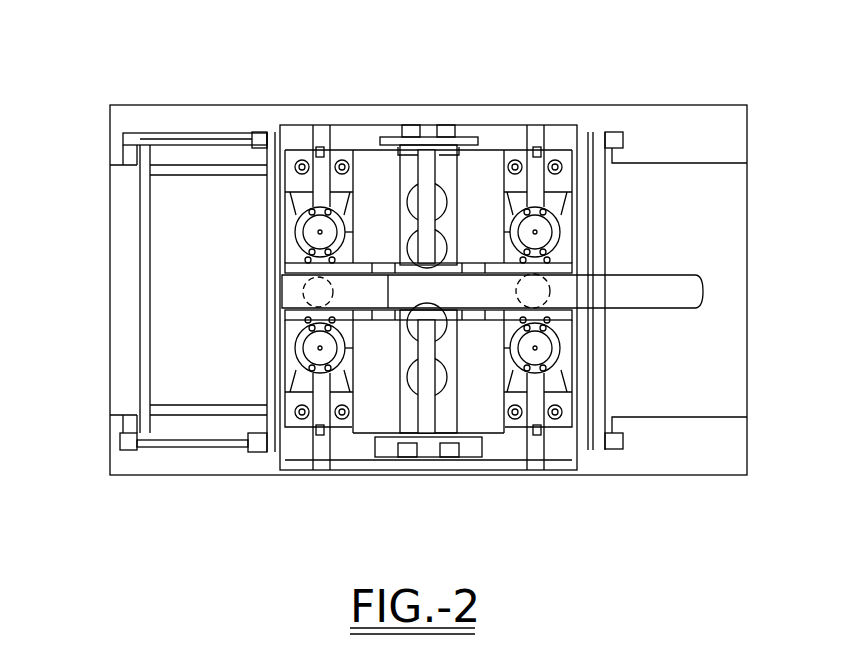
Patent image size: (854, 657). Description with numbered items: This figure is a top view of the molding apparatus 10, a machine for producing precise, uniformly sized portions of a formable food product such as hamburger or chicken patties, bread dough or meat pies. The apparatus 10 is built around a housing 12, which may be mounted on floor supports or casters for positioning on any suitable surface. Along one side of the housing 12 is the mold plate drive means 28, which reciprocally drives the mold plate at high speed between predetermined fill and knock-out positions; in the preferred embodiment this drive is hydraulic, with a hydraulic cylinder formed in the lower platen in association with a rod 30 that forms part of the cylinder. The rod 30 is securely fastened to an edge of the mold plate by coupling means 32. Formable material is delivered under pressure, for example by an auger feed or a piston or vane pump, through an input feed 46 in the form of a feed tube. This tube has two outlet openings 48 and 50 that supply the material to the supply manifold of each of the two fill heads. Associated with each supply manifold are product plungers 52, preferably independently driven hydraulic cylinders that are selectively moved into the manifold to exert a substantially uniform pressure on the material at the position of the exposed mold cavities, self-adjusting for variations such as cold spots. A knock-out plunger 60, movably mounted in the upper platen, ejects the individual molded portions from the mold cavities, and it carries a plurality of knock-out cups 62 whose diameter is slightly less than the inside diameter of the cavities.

The molding apparatus 10 is at (160, 88).
The housing 12 is at (110, 200).
The mold plate drive means 28 is at (175, 455).
The rod 30 is at (217, 448).
The coupling means 32 is at (138, 273).
The input feed 46 is at (665, 275).
The outlet opening 48 is at (302, 291).
The outlet opening 50 is at (550, 291).
The product plungers 52 is at (296, 232).
The knock-out plunger 60 is at (427, 430).
The knock-out cups 62 is at (443, 327).